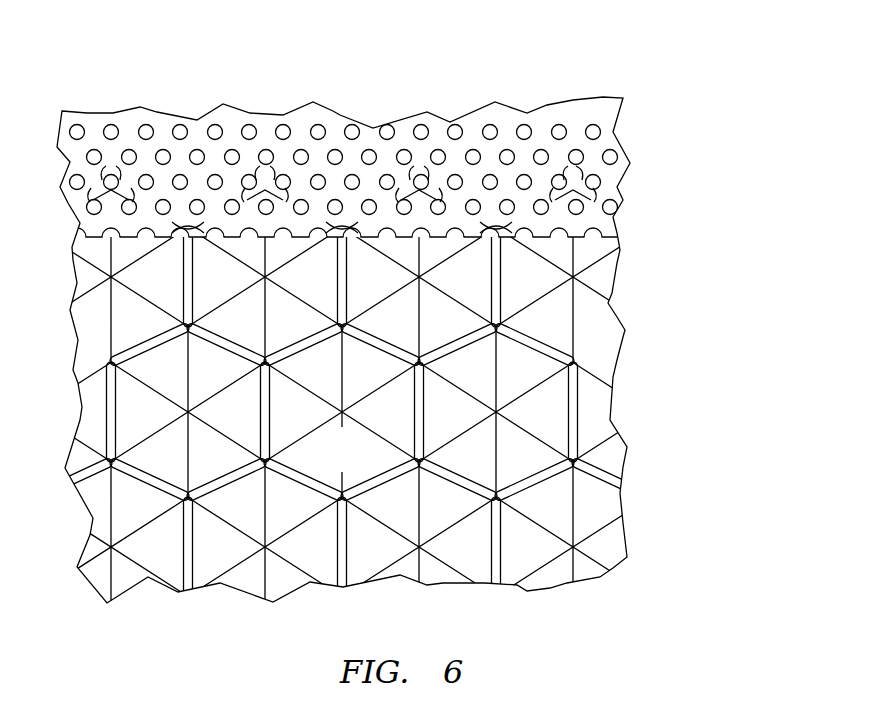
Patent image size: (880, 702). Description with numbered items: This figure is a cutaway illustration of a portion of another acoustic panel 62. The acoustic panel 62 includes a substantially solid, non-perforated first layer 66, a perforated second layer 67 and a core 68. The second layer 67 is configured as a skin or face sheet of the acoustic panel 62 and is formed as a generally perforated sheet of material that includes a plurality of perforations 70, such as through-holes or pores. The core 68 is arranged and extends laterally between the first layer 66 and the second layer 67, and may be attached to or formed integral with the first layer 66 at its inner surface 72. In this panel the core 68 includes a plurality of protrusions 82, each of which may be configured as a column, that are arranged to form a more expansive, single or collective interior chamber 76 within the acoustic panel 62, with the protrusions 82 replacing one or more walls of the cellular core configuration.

The acoustic panel 62 is at (680, 120).
The first layer 66 is at (622, 313).
The second layer 67 is at (556, 98).
The core 68 is at (641, 377).
The perforations 70 is at (471, 150).
The inner surface 72 is at (595, 502).
The interior chamber 76 is at (359, 464).
The protrusions 82 is at (587, 450).